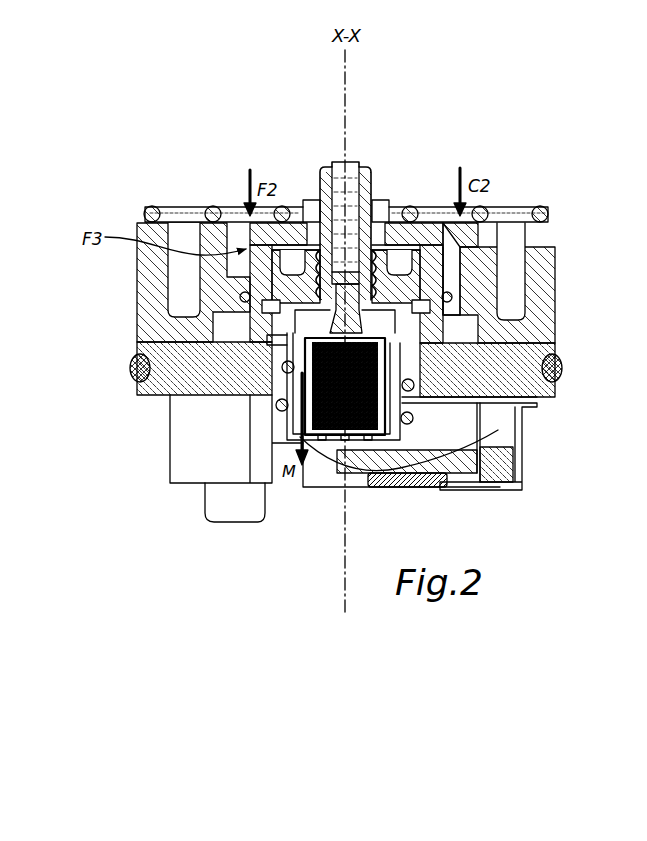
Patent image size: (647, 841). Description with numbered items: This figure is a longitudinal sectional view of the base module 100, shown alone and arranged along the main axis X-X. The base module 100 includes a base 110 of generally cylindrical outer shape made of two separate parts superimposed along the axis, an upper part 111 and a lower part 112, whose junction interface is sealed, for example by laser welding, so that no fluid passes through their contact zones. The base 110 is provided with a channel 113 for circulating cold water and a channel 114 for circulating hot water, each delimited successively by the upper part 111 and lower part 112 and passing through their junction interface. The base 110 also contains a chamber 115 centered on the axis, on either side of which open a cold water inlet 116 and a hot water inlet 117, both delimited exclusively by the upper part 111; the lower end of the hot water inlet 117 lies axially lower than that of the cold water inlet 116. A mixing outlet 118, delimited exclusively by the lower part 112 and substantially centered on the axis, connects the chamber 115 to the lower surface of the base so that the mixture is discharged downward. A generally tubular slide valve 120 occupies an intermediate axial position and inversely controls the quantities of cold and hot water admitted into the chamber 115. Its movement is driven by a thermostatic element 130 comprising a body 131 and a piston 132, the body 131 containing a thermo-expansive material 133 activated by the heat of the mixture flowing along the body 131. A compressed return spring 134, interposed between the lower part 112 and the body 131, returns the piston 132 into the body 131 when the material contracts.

The base module 100 is at (158, 470).
The base 110 is at (295, 310).
The upper part 111 is at (153, 279).
The lower part 112 is at (137, 390).
The channel 113 is at (182, 232).
The channel 114 is at (510, 247).
The chamber 115 is at (450, 337).
The cold water inlet 116 is at (237, 240).
The hot water inlet 117 is at (462, 247).
The mixing outlet 118 is at (424, 349).
The slide valve 120 is at (443, 270).
The thermostatic element 130 is at (276, 348).
The body 131 is at (408, 423).
The piston 132 is at (352, 168).
The thermo-expansive material 133 is at (342, 432).
The return spring 134 is at (278, 367).